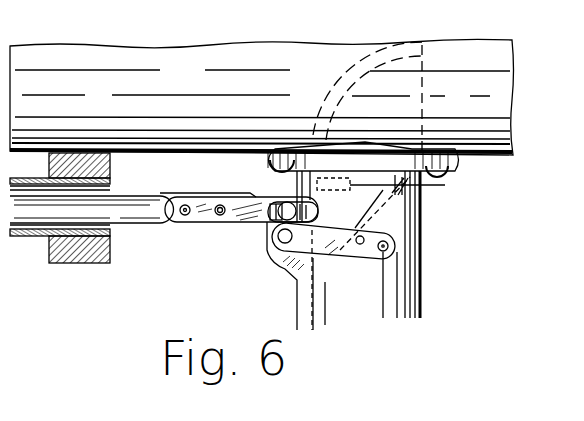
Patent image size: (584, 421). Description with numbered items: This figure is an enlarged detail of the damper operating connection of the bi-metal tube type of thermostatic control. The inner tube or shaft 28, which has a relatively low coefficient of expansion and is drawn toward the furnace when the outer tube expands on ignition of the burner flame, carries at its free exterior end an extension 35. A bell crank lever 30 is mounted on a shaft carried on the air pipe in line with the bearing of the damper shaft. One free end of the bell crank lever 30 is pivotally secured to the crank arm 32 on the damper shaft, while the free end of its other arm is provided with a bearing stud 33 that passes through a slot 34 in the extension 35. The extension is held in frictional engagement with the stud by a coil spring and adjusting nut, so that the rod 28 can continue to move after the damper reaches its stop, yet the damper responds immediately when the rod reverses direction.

The tube or shaft 28 is at (113, 213).
The bell crank lever 30 is at (287, 252).
The crank arm 32 is at (356, 227).
The bearing stud 33 is at (285, 206).
The slot 34 is at (272, 207).
The extension 35 is at (245, 210).